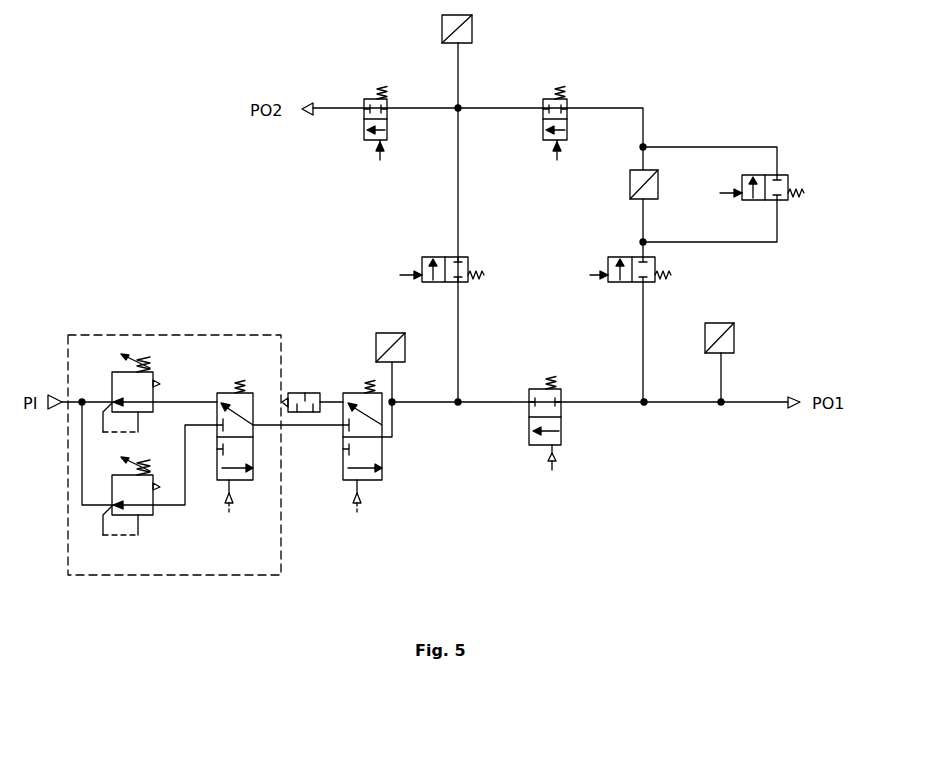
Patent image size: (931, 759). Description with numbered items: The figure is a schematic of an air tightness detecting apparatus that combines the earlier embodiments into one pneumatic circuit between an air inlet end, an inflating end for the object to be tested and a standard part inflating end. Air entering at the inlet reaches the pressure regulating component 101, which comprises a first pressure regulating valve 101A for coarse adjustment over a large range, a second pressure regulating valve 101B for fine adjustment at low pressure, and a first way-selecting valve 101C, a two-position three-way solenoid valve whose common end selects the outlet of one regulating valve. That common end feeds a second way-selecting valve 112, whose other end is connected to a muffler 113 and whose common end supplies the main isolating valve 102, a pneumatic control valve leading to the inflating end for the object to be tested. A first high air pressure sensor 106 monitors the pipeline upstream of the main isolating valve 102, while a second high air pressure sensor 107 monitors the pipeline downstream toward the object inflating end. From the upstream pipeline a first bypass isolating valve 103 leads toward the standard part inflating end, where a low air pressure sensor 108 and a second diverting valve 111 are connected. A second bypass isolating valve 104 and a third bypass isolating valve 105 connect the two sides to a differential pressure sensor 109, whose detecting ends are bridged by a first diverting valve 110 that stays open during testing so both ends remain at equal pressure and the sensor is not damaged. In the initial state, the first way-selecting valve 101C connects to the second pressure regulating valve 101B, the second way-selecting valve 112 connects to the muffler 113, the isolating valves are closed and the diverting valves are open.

The pressure regulating component 101 is at (125, 334).
The first pressure regulating valve 101A is at (153, 510).
The second pressure regulating valve 101B is at (152, 371).
The first way-selecting valve 101C is at (253, 481).
The main isolating valve 102 is at (561, 433).
The first bypass isolating valve 103 is at (445, 282).
The second bypass isolating valve 104 is at (632, 282).
The third bypass isolating valve 105 is at (567, 120).
The first high air pressure sensor 106 is at (405, 353).
The second high air pressure sensor 107 is at (734, 342).
The low air pressure sensor 108 is at (472, 33).
The differential pressure sensor 109 is at (658, 190).
The first diverting valve 110 is at (792, 200).
The second diverting valve 111 is at (387, 135).
The second way-selecting valve 112 is at (382, 453).
The muffler 113 is at (293, 393).